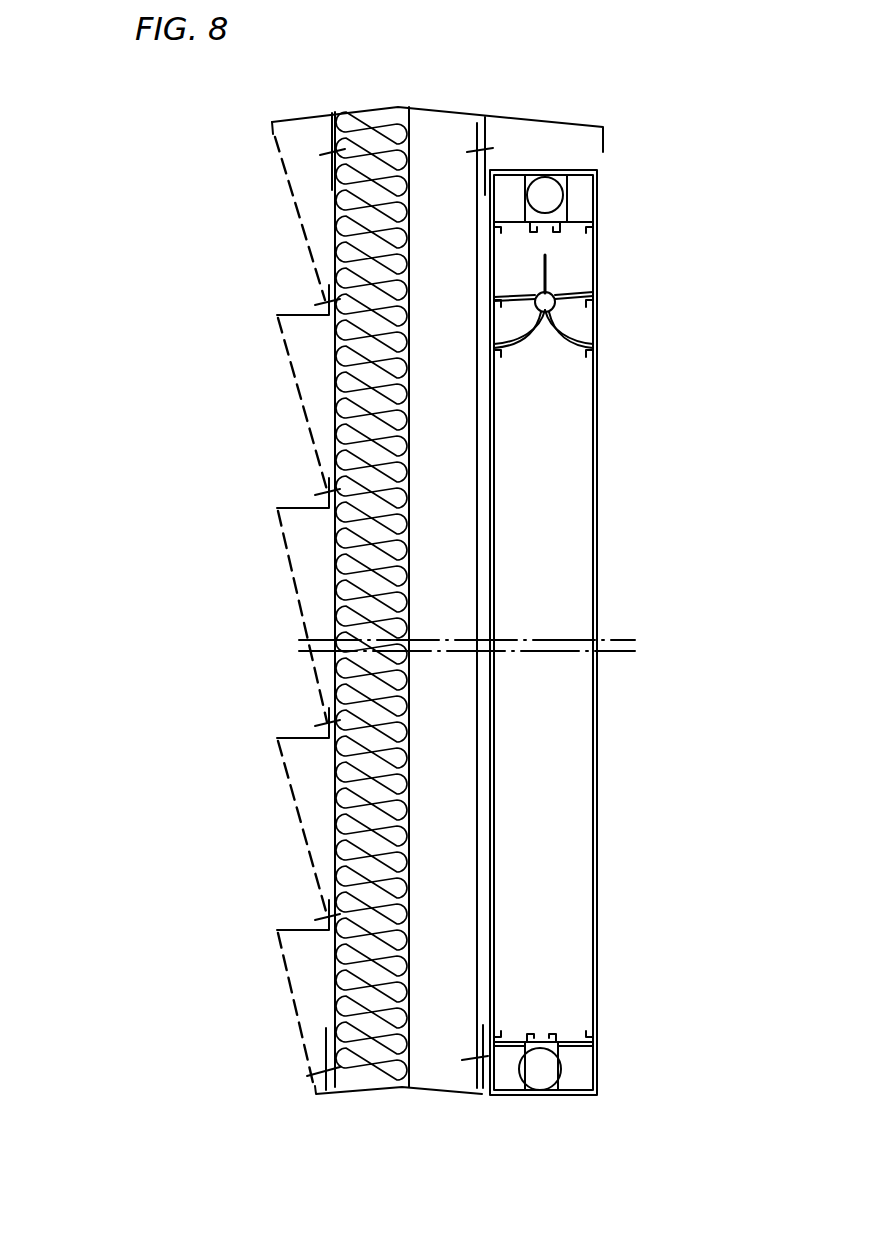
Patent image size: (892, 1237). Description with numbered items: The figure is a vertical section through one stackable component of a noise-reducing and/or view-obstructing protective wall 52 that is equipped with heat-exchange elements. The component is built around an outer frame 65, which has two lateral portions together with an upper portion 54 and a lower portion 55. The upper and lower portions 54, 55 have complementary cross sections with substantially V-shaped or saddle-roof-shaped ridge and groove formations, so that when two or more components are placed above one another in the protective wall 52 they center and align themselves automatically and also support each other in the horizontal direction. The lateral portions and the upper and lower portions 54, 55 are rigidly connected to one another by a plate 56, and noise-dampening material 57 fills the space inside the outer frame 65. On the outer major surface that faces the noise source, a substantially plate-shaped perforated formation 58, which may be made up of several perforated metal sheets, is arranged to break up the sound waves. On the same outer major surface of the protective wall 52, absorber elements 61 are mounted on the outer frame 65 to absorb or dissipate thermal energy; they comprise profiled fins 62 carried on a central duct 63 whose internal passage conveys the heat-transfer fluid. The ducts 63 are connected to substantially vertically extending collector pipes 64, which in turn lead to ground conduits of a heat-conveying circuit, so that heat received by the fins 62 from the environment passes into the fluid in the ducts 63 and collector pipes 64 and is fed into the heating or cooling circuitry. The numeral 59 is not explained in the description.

The protective wall 52 is at (230, 1082).
The upper portion 54 is at (432, 106).
The lower portion 55 is at (448, 1100).
The plate 56 is at (341, 976).
The noise-dampening material 57 is at (355, 852).
The perforated formation 58 is at (293, 797).
The frame profile 59 is at (533, 117).
The absorber elements 61 is at (584, 280).
The profiled fins 62 is at (597, 342).
The central duct 63 is at (548, 312).
The collector pipes 64 is at (540, 1063).
The outer frame 65 is at (377, 1103).